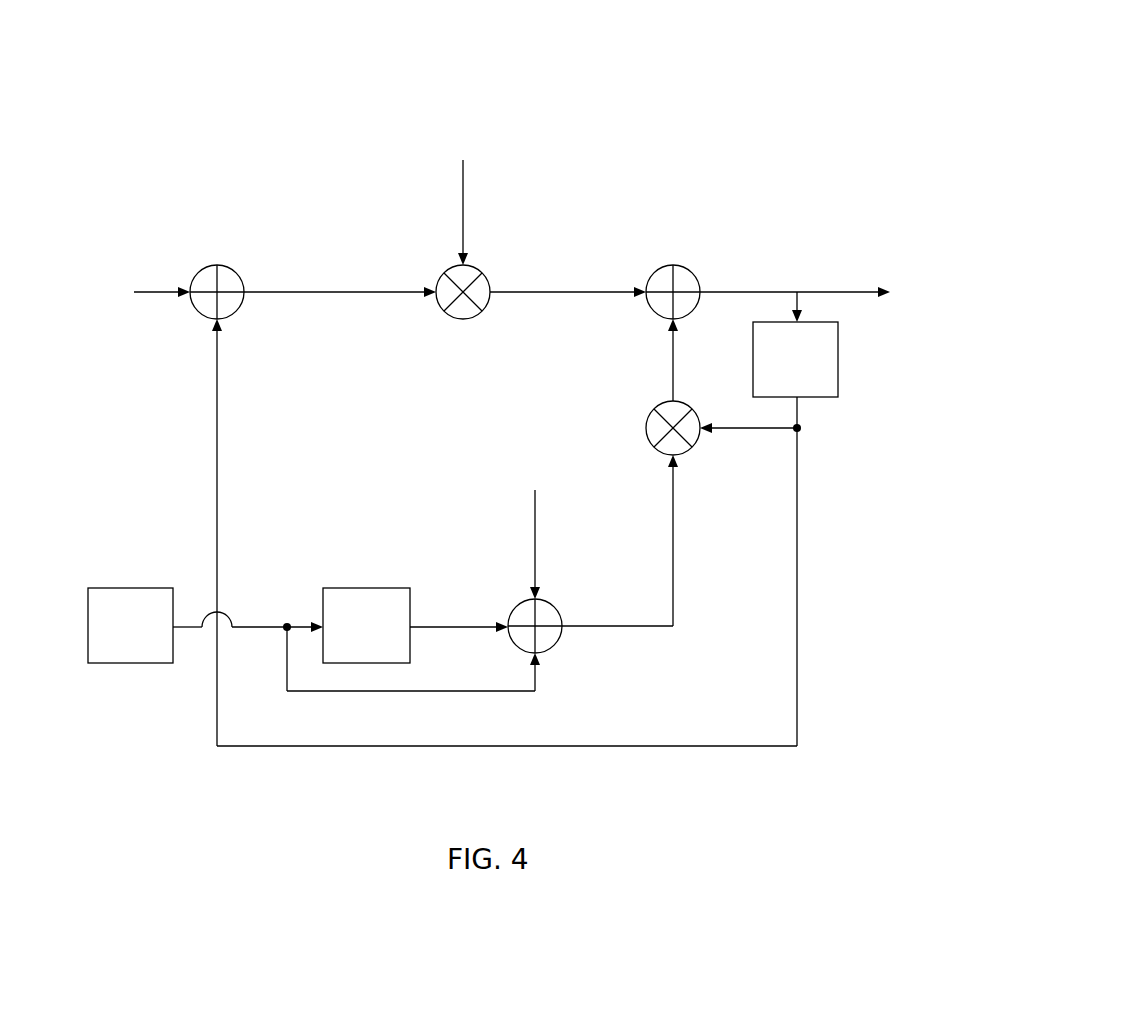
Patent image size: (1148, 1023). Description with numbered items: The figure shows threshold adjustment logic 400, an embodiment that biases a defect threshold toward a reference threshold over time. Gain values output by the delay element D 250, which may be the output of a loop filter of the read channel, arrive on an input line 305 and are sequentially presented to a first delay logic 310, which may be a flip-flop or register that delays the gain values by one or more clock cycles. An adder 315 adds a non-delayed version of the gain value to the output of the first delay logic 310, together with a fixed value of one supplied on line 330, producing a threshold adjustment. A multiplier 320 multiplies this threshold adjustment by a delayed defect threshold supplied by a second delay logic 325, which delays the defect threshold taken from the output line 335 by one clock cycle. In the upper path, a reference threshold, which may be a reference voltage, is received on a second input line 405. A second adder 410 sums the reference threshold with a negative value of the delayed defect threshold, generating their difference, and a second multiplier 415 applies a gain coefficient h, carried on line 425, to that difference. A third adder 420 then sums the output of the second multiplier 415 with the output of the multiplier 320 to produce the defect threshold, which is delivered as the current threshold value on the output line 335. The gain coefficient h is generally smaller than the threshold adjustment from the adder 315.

The threshold adjustment logic 400 is at (750, 71).
The second input line 405 is at (150, 292).
The second adder 410 is at (232, 316).
The second multiplier 415 is at (470, 317).
The third adder 420 is at (673, 265).
The line 425 is at (463, 218).
The output line 335 is at (808, 292).
The second delay logic 325 is at (815, 395).
The multiplier 320 is at (690, 450).
The line 330 is at (535, 516).
The adder 315 is at (553, 604).
The input line 305 is at (253, 627).
The delay element D 250 is at (150, 661).
The first delay logic 310 is at (385, 661).